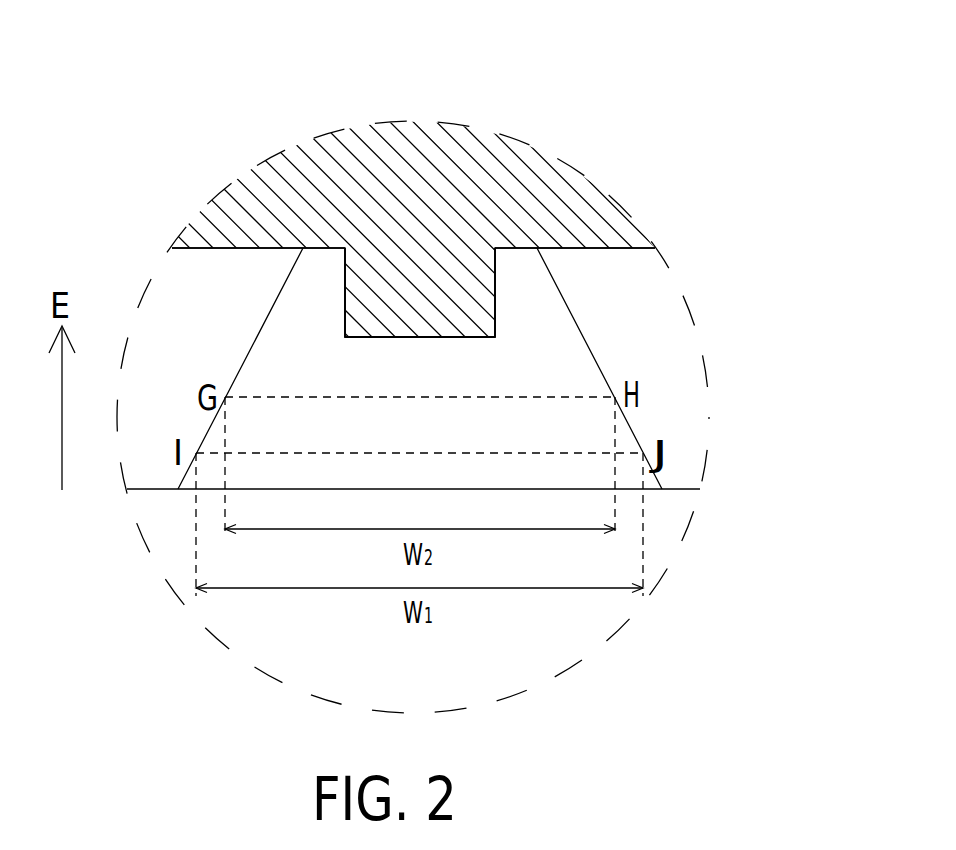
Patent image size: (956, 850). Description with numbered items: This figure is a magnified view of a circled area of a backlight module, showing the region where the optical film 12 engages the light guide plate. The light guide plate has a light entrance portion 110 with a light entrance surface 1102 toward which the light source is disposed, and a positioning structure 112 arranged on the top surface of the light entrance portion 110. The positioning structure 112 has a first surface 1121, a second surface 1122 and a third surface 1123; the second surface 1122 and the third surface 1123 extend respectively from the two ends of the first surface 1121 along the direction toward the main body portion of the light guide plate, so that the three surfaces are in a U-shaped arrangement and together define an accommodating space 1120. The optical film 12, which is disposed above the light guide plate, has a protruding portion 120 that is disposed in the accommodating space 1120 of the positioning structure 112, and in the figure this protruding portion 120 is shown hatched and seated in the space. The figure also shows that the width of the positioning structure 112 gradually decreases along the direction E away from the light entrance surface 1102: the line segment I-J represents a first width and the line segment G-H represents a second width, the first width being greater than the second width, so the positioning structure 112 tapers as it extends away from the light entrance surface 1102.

The optical film 12 is at (542, 155).
The light entrance portion 110 is at (662, 278).
The positioning structure 112 is at (277, 343).
The protruding portion 120 is at (472, 307).
The light entrance surface 1102 is at (592, 489).
The accommodating space 1120 is at (392, 312).
The first surface 1121 is at (420, 337).
The second surface 1122 is at (345, 294).
The third surface 1123 is at (495, 292).